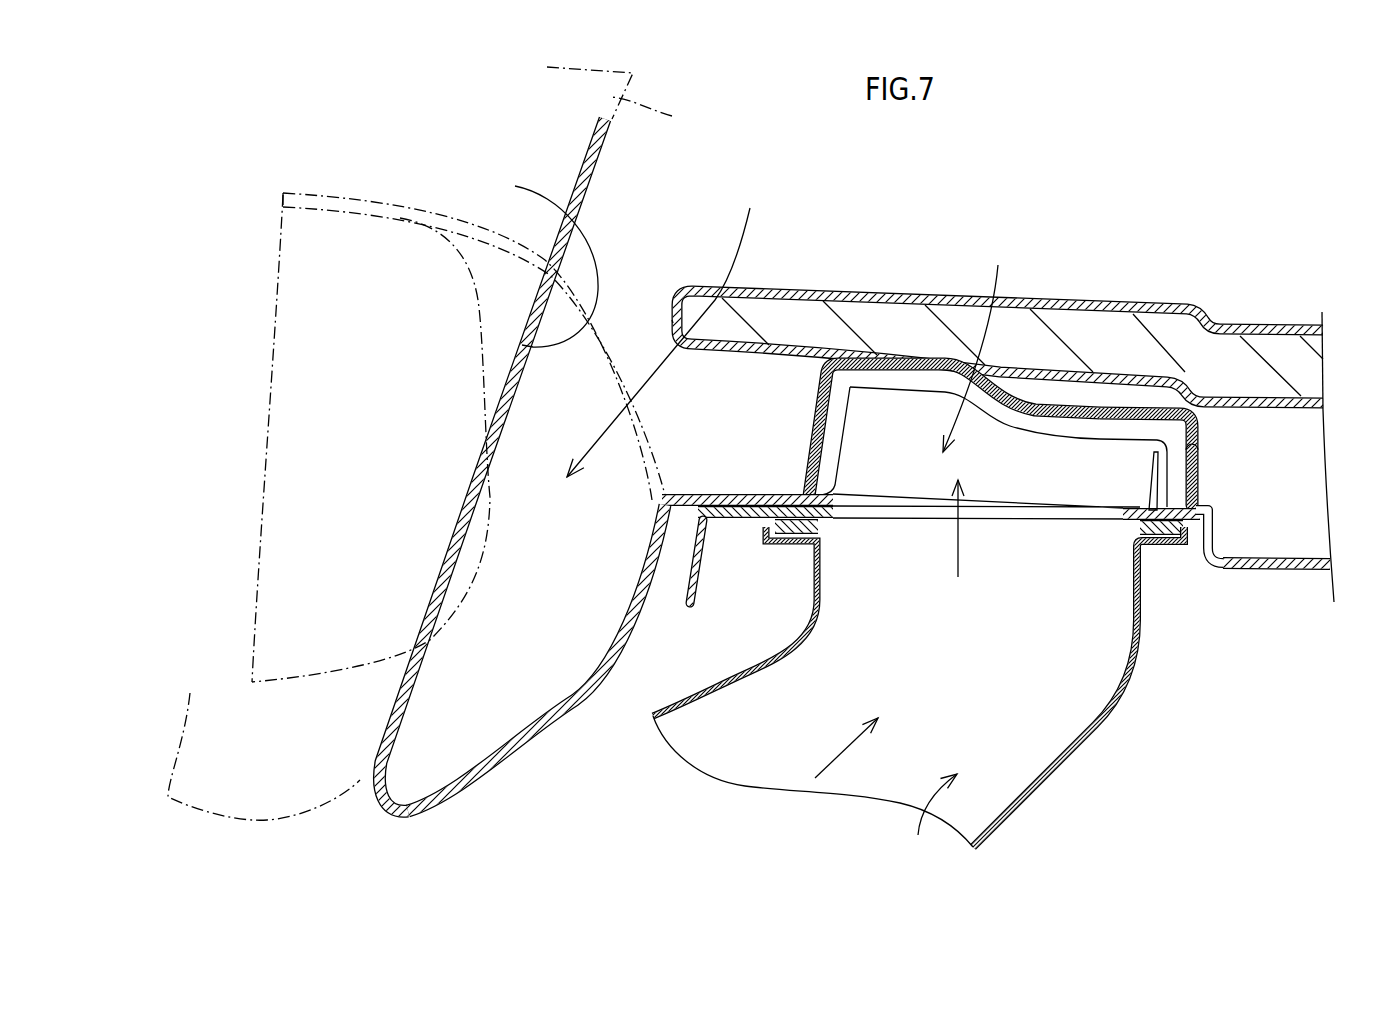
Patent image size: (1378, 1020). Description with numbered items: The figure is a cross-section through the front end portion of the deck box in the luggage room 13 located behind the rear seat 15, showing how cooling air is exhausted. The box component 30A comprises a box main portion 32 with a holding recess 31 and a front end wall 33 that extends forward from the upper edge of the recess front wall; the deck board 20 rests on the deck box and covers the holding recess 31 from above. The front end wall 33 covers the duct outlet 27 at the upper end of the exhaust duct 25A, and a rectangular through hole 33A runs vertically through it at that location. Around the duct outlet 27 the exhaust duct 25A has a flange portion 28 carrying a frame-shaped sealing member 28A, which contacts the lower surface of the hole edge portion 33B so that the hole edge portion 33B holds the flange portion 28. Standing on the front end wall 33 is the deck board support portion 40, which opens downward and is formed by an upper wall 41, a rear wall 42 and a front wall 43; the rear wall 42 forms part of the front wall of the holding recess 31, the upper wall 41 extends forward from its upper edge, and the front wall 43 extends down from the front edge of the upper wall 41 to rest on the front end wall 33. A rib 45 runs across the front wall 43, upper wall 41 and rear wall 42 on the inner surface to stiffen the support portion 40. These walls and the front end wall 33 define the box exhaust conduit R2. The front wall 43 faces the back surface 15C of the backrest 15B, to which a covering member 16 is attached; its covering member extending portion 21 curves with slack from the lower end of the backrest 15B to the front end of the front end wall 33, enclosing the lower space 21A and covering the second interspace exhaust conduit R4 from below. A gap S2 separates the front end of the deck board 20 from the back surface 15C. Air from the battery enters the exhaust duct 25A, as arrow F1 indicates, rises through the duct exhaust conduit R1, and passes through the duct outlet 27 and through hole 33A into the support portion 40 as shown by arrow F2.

The luggage room 13 is at (1007, 172).
The rear seat 15 is at (603, 63).
The backrest 15B is at (662, 114).
The back surface 15C is at (537, 257).
The covering member 16 is at (600, 177).
The deck board 20 is at (1263, 347).
The covering member extending portion 21 is at (582, 697).
The lower space 21A is at (625, 622).
The exhaust duct 25A is at (1043, 780).
The duct outlet 27 is at (1133, 548).
The flange portion 28 is at (1155, 524).
The sealing member 28A is at (1168, 532).
The box component 30A is at (1267, 585).
The holding recess 31 is at (1250, 524).
The box main portion 32 is at (1303, 572).
The front end wall 33 is at (761, 494).
The through hole 33A is at (820, 578).
The hole edge portion 33B is at (1168, 492).
The deck board support portion 40 is at (1035, 393).
The upper wall 41 is at (923, 366).
The rear wall 42 is at (1207, 435).
The front wall 43 is at (827, 418).
The rib 45 is at (1107, 427).
The gap S2 is at (673, 323).
The second interspace exhaust conduit R4 is at (665, 328).
The box exhaust conduit R2 is at (978, 344).
The duct exhaust conduit R1 is at (932, 818).
The arrow indicating air flow F1 is at (846, 732).
The arrow indicating air flow F2 is at (971, 528).